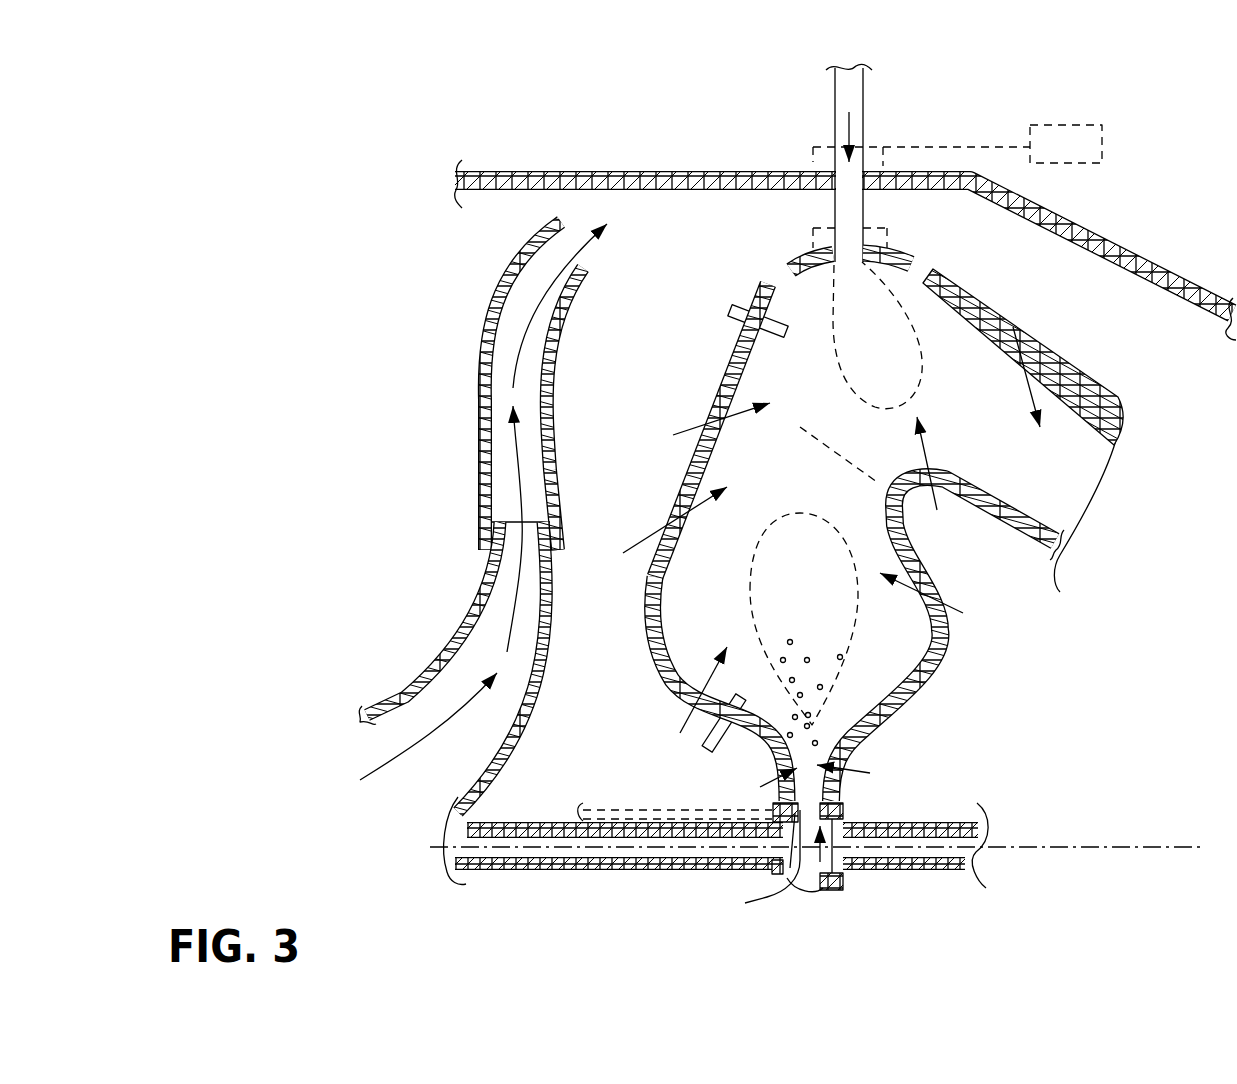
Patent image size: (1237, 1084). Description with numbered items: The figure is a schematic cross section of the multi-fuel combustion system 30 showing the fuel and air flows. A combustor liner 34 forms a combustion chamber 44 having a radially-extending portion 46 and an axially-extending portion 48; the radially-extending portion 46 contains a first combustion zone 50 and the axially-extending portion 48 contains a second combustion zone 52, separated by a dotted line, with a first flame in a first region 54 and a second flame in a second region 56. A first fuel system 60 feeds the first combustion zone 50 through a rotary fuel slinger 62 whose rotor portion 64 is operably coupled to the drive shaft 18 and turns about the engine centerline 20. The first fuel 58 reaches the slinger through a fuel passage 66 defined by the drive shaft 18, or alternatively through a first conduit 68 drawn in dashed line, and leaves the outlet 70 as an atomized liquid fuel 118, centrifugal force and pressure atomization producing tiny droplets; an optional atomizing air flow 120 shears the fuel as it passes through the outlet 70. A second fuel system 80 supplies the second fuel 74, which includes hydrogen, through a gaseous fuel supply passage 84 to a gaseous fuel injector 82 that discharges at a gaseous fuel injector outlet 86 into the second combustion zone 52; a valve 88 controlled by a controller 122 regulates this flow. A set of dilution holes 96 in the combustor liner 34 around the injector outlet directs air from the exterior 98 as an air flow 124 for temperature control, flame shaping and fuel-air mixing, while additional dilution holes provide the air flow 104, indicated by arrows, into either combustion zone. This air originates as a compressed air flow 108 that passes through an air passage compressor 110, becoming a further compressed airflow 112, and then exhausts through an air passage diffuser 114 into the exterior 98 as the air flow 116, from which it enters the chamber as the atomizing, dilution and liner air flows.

The drive shaft 18 is at (513, 873).
The engine centerline 20 is at (1137, 845).
The multi-fuel combustion system 30 is at (632, 582).
The combustor liner 34 is at (1082, 395).
The combustion chamber 44 is at (792, 428).
The radially-extending portion 46 is at (652, 632).
The axially-extending portion 48 is at (955, 363).
The first combustion zone 50 is at (841, 504).
The second combustion zone 52 is at (866, 455).
The first region 54 is at (860, 619).
The second region 56 is at (921, 334).
The first fuel 58 is at (823, 857).
The first fuel system 60 is at (760, 802).
The rotary fuel slinger 62 is at (847, 802).
The rotor portion 64 is at (977, 803).
The fuel passage 66 is at (700, 841).
The first conduit 68 is at (603, 800).
The outlet 70 is at (752, 904).
The second fuel 74 is at (867, 127).
The second fuel system 80 is at (902, 138).
The gaseous fuel injector 82 is at (868, 211).
The gaseous fuel supply passage 84 is at (833, 127).
The gaseous fuel injector outlet 86 is at (840, 258).
The valve 88 is at (813, 158).
The set of dilution holes 96 is at (790, 290).
The exterior 98 is at (652, 304).
The air flow 104 is at (1020, 350).
The compressed air flow 108 is at (412, 758).
The air passage compressor 110 is at (443, 660).
The further compressed airflow 112 is at (513, 473).
The air passage diffuser 114 is at (480, 405).
The air flow 116 is at (523, 317).
The atomized liquid fuel 118 is at (823, 687).
The atomizing air flow 120 is at (765, 778).
The controller 122 is at (1063, 125).
The air flow 124 is at (797, 297).